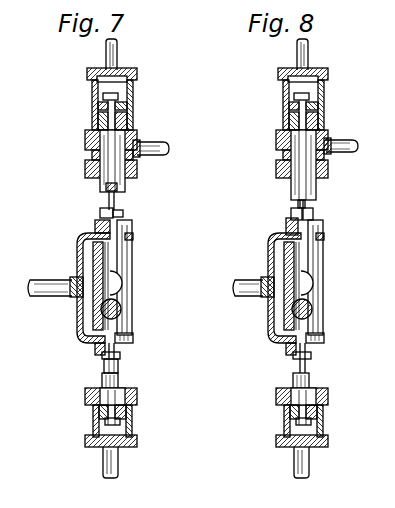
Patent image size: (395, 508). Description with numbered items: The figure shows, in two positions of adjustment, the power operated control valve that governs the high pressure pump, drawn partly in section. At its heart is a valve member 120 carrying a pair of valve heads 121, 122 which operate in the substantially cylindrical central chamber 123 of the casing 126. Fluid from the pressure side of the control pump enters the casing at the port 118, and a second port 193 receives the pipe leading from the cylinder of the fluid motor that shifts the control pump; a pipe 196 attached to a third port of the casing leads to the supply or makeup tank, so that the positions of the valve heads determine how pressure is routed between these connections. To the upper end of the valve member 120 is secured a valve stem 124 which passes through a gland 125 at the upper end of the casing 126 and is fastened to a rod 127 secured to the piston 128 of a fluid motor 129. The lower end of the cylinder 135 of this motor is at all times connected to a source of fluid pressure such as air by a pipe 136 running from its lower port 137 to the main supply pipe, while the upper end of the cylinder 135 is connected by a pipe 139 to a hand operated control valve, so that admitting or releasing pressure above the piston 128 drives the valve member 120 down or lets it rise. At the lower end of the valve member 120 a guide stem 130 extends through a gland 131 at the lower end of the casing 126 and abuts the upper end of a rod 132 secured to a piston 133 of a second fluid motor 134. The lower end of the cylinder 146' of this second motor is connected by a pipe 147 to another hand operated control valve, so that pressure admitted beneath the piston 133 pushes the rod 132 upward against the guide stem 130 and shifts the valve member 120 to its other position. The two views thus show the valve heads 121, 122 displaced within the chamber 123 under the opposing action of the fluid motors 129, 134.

In FIG. 7, the port 118 is at (121, 285).
In FIG. 8, the port 118 is at (312, 286).
In FIG. 7, the valve member 120 is at (98, 296).
In FIG. 8, the valve member 120 is at (297, 313).
In FIG. 8, the valve head 121 is at (285, 272).
In FIG. 8, the valve head 122 is at (281, 331).
In FIG. 8, the central chamber 123 is at (289, 295).
In FIG. 8, the valve stem 124 is at (306, 205).
In FIG. 8, the gland 125 is at (313, 215).
In FIG. 8, the casing 126 is at (324, 257).
In FIG. 7, the rod 127 is at (100, 185).
In FIG. 7, the piston 128 is at (118, 100).
In FIG. 7, the fluid motor 129 is at (92, 97).
In FIG. 8, the fluid motor 129 is at (323, 101).
In FIG. 7, the guide stem 130 is at (104, 372).
In FIG. 7, the gland 131 is at (95, 349).
In FIG. 7, the rod 132 is at (119, 381).
In FIG. 7, the piston 133 is at (132, 412).
In FIG. 7, the second fluid motor 134 is at (93, 419).
In FIG. 8, the second fluid motor 134 is at (323, 419).
In FIG. 7, the cylinder 135 is at (130, 115).
In FIG. 7, the pipe 136 is at (158, 154).
In FIG. 8, the pipe 136 is at (333, 139).
In FIG. 7, the lower port 137 is at (140, 158).
In FIG. 7, the pipe 139 is at (117, 53).
In FIG. 8, the pipe 139 is at (308, 53).
In FIG. 7, the cylinder 146' is at (139, 426).
In FIG. 7, the pipe 147 is at (118, 456).
In FIG. 8, the pipe 147 is at (309, 456).
In FIG. 7, the port 193 is at (121, 312).
In FIG. 8, the port 193 is at (312, 312).
In FIG. 7, the pipe 196 is at (57, 279).